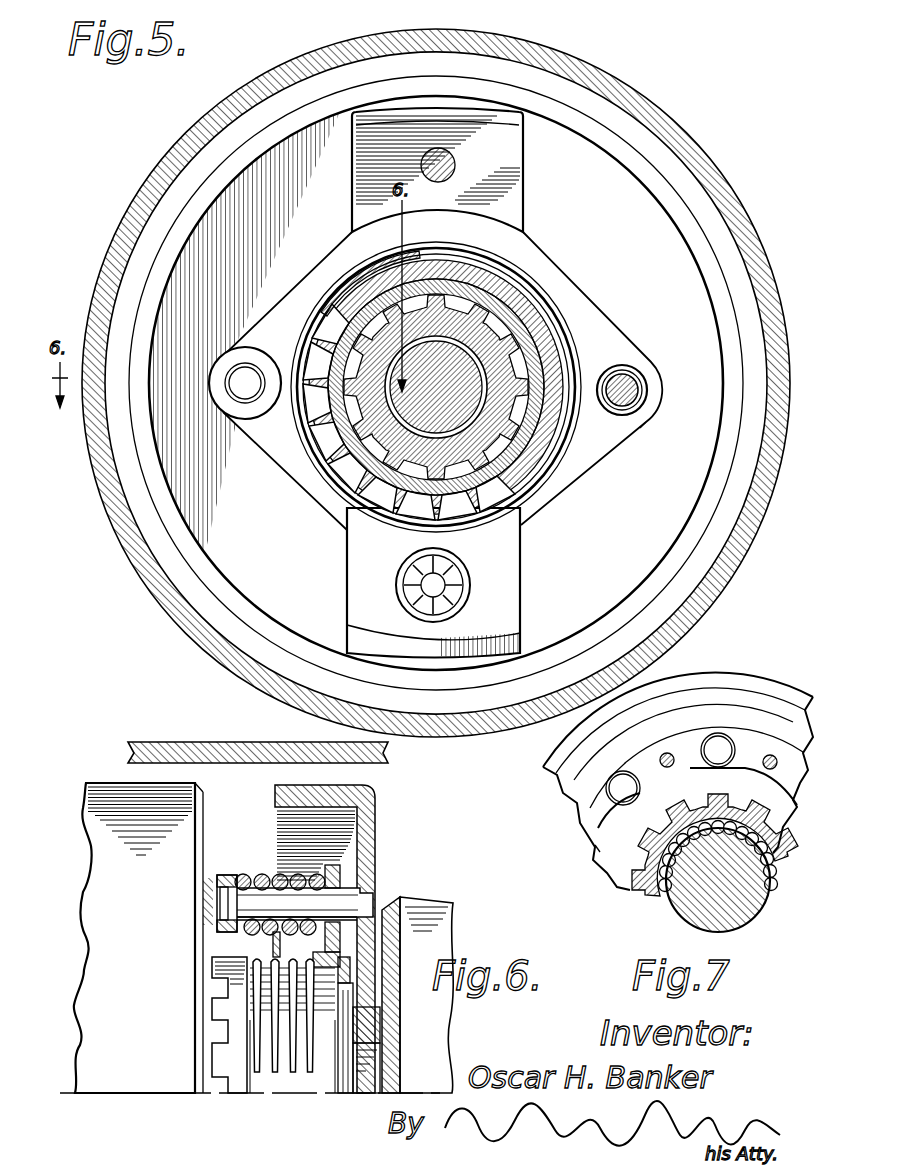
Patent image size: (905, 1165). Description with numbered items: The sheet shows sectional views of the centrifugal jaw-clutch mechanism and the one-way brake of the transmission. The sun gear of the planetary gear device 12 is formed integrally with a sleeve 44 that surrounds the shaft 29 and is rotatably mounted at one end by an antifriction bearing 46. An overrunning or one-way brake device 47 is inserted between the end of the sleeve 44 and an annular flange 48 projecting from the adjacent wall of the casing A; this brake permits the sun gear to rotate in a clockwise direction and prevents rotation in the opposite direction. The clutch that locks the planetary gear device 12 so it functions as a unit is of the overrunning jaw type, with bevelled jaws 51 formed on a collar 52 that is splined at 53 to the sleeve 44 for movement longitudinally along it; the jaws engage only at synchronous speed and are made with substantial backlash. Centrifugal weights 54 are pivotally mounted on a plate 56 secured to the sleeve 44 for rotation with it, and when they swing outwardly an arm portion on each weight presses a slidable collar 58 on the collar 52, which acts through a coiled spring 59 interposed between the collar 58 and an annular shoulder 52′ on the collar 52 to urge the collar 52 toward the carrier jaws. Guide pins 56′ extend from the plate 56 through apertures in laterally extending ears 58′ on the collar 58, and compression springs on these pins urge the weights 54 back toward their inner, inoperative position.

In FIG. 5, the casing A is at (757, 238).
In FIG. 5, the plate 56 is at (685, 218).
In FIG. 6, the plate 56 is at (372, 843).
In FIG. 5, the slidable collar 58 is at (598, 339).
In FIG. 6, the slidable collar 58 is at (378, 902).
In FIG. 5, the laterally extending ears 58′ is at (648, 400).
In FIG. 6, the laterally extending ears 58′ is at (368, 808).
In FIG. 5, the guide pins 56′ is at (628, 387).
In FIG. 6, the guide pins 56′ is at (330, 900).
In FIG. 5, the centrifugal weights 54 is at (525, 207).
In FIG. 5, the jaws 51 is at (345, 428).
In FIG. 6, the jaws 51 is at (222, 1063).
In FIG. 5, the spline 53 is at (352, 447).
In FIG. 5, the coiled spring 59 is at (357, 275).
In FIG. 6, the coiled spring 59 is at (281, 1063).
In FIG. 5, the sleeve 44 is at (515, 353).
In FIG. 7, the sleeve 44 is at (647, 880).
In FIG. 5, the shaft 29 is at (413, 420).
In FIG. 7, the shaft 29 is at (737, 915).
In FIG. 5, the collar 52 is at (545, 338).
In FIG. 6, the collar 52 is at (318, 1078).
In FIG. 6, the planetary gear device 12 is at (135, 1080).
In FIG. 6, the annular shoulder 52′ is at (255, 1078).
In FIG. 7, the annular flange 48 is at (712, 715).
In FIG. 7, the one-way brake device 47 is at (588, 853).
In FIG. 7, the antifriction bearing 46 is at (770, 861).